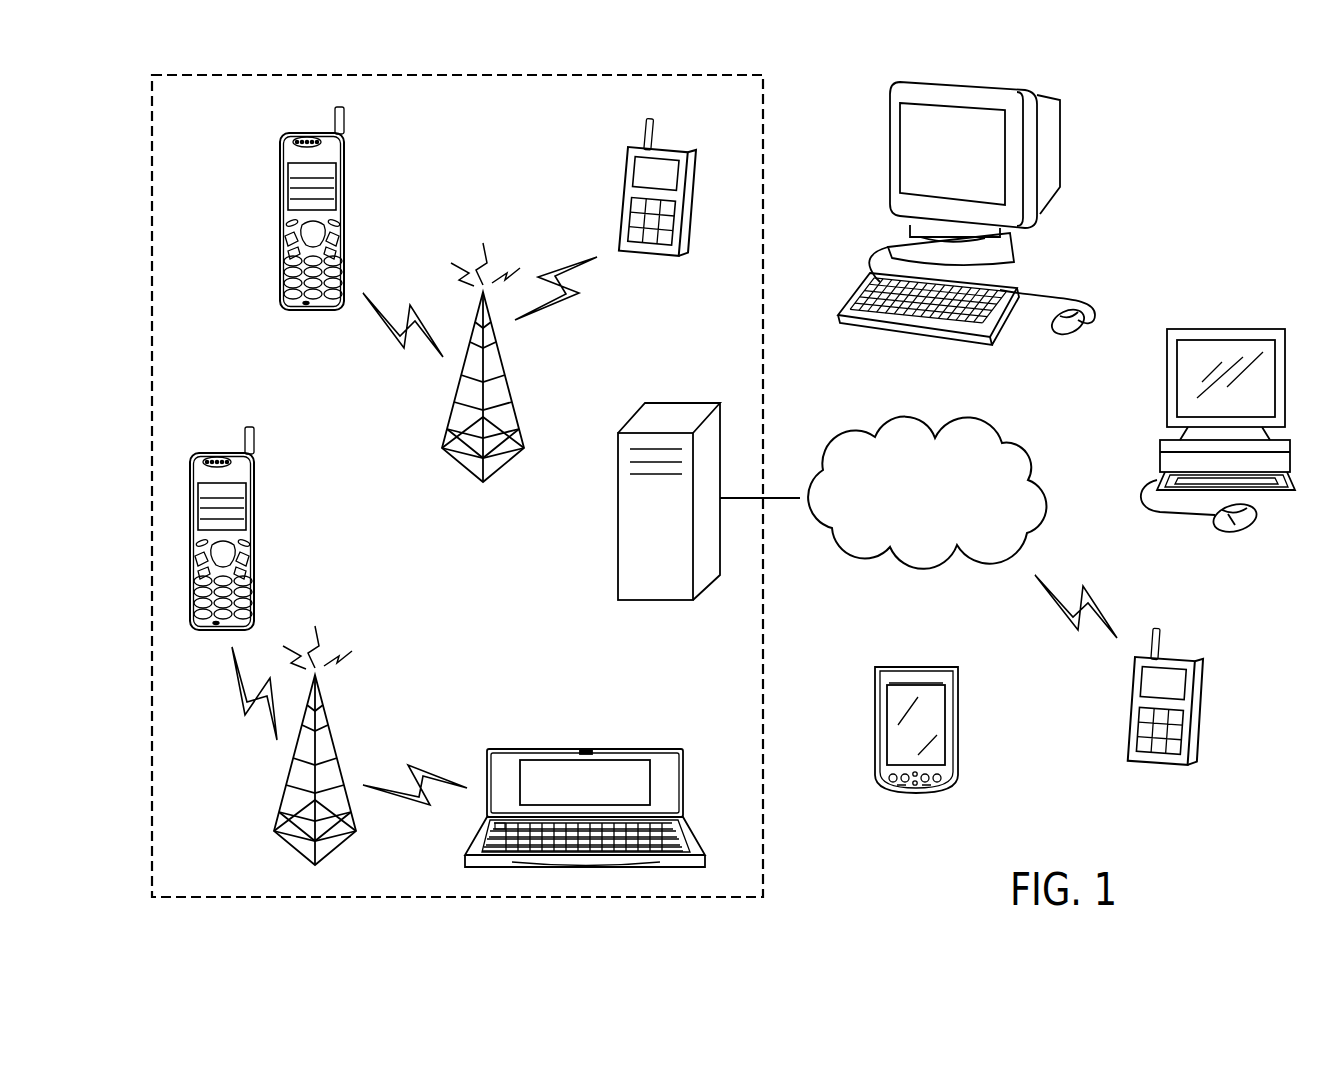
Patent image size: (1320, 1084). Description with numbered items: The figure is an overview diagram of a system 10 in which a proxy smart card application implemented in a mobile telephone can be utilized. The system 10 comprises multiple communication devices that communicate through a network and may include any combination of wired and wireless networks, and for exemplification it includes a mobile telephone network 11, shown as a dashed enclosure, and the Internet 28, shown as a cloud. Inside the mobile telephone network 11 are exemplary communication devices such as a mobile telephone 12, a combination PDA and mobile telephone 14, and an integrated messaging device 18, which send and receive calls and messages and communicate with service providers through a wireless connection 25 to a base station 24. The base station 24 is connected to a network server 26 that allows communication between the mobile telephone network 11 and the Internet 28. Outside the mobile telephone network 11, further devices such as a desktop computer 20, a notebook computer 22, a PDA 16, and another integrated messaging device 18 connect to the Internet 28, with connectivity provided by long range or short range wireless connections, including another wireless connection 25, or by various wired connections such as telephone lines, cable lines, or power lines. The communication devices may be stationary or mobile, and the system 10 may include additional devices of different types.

The system 10 is at (1273, 609).
The mobile telephone network 11 is at (197, 120).
The mobile telephone 12 is at (343, 222).
The combination PDA and mobile telephone 14 is at (586, 749).
The PDA 16 is at (958, 727).
The integrated messaging device 18 is at (620, 199).
The desktop computer 20 is at (1060, 140).
The notebook computer 22 is at (1225, 329).
The base station 24 is at (502, 367).
The wireless connection 25 is at (252, 720).
The network server 26 is at (618, 517).
The Internet 28 is at (970, 418).